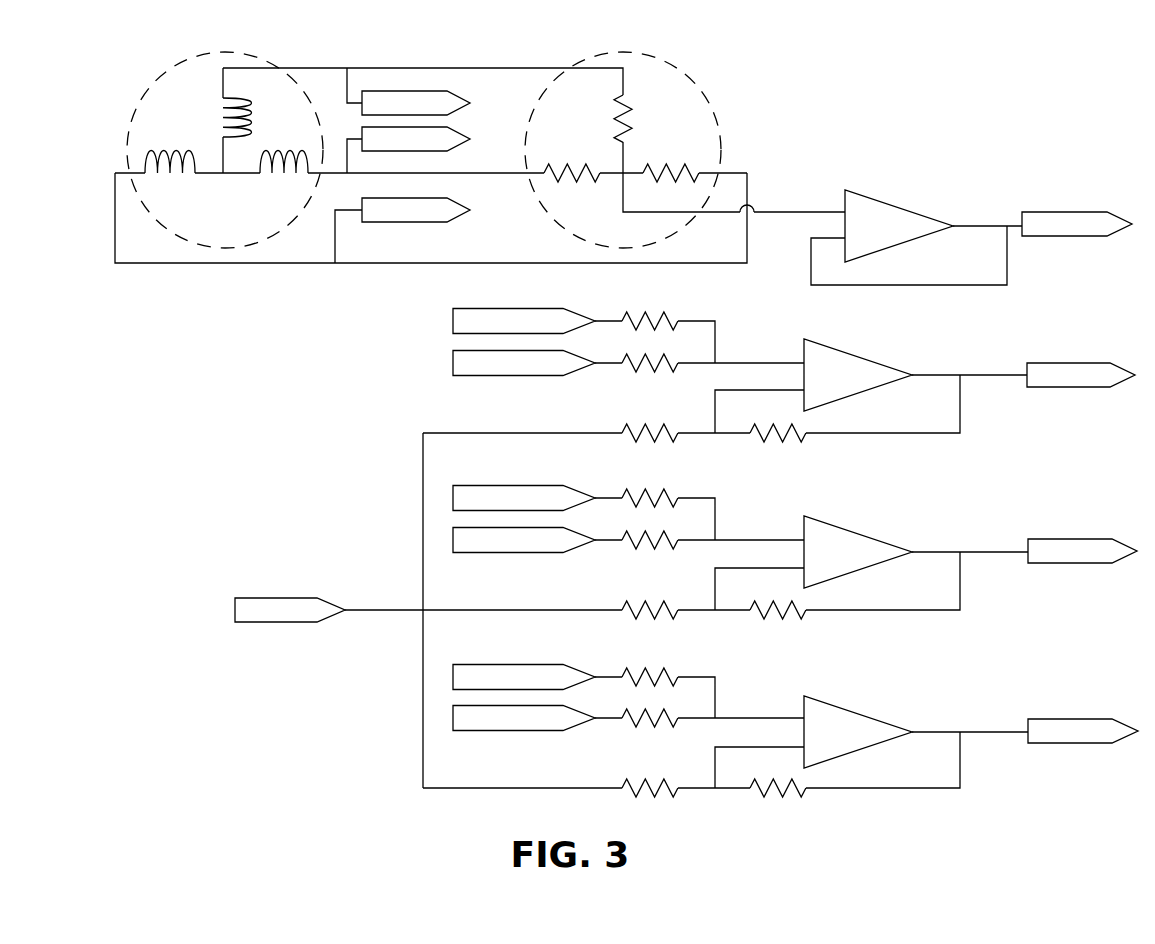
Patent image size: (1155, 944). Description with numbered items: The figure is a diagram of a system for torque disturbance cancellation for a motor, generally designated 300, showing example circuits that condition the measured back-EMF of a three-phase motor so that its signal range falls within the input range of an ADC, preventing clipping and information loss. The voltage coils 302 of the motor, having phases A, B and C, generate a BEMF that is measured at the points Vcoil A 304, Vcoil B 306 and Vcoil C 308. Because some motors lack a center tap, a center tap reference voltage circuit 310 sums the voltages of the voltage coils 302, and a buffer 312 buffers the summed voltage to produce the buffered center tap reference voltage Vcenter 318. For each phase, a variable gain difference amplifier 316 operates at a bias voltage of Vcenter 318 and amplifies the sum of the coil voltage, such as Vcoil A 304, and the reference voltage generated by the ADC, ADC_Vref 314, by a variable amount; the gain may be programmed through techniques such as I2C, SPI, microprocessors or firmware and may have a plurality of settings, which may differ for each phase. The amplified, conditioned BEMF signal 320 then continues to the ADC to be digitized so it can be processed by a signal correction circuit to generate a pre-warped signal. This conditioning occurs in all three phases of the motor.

The system for torque disturbance cancellation 300 is at (903, 96).
The voltage coils 302 is at (152, 96).
The Vcoil A 304 is at (450, 100).
The Vcoil B 306 is at (450, 137).
The Vcoil C 308 is at (450, 206).
The center tap reference voltage circuit 310 is at (697, 96).
The buffer 312 is at (892, 217).
The ADC_Vref 314 is at (567, 371).
The difference amplifier 316 is at (860, 366).
The Vcenter 318 is at (1068, 213).
The conditioned BEMF signal 320 is at (1092, 367).